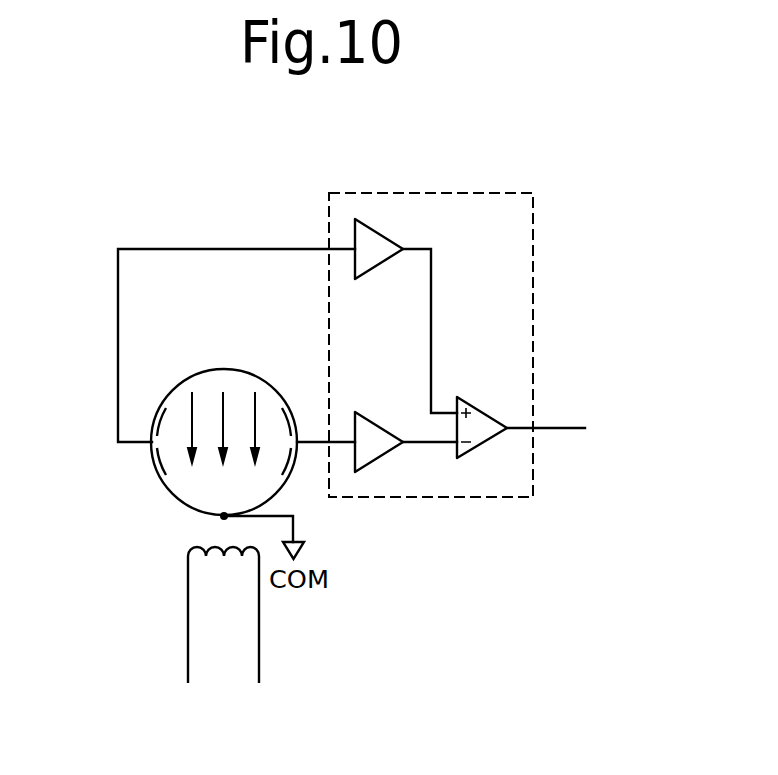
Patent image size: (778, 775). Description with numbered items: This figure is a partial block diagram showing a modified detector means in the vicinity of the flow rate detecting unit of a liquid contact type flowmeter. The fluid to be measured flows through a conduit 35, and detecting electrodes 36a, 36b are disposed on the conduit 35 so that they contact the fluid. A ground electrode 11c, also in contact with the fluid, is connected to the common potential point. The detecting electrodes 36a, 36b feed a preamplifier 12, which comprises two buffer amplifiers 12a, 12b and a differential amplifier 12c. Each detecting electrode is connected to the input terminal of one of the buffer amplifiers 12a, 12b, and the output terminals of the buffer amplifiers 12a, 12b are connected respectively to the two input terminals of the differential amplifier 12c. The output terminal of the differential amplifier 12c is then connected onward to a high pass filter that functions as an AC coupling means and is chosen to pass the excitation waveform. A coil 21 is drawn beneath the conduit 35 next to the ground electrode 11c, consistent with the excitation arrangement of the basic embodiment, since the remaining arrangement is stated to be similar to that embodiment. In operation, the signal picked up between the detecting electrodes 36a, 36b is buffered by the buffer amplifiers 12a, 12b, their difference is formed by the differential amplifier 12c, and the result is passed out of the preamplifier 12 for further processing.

The preamplifier 12 is at (358, 193).
The buffer amplifier 12a is at (375, 242).
The buffer amplifier 12b is at (378, 454).
The differential amplifier 12c is at (487, 409).
The conduit 35 is at (222, 369).
The detecting electrode 36a is at (156, 459).
The detecting electrode 36b is at (288, 408).
The ground electrode 11c is at (222, 517).
The coil 21 is at (230, 566).